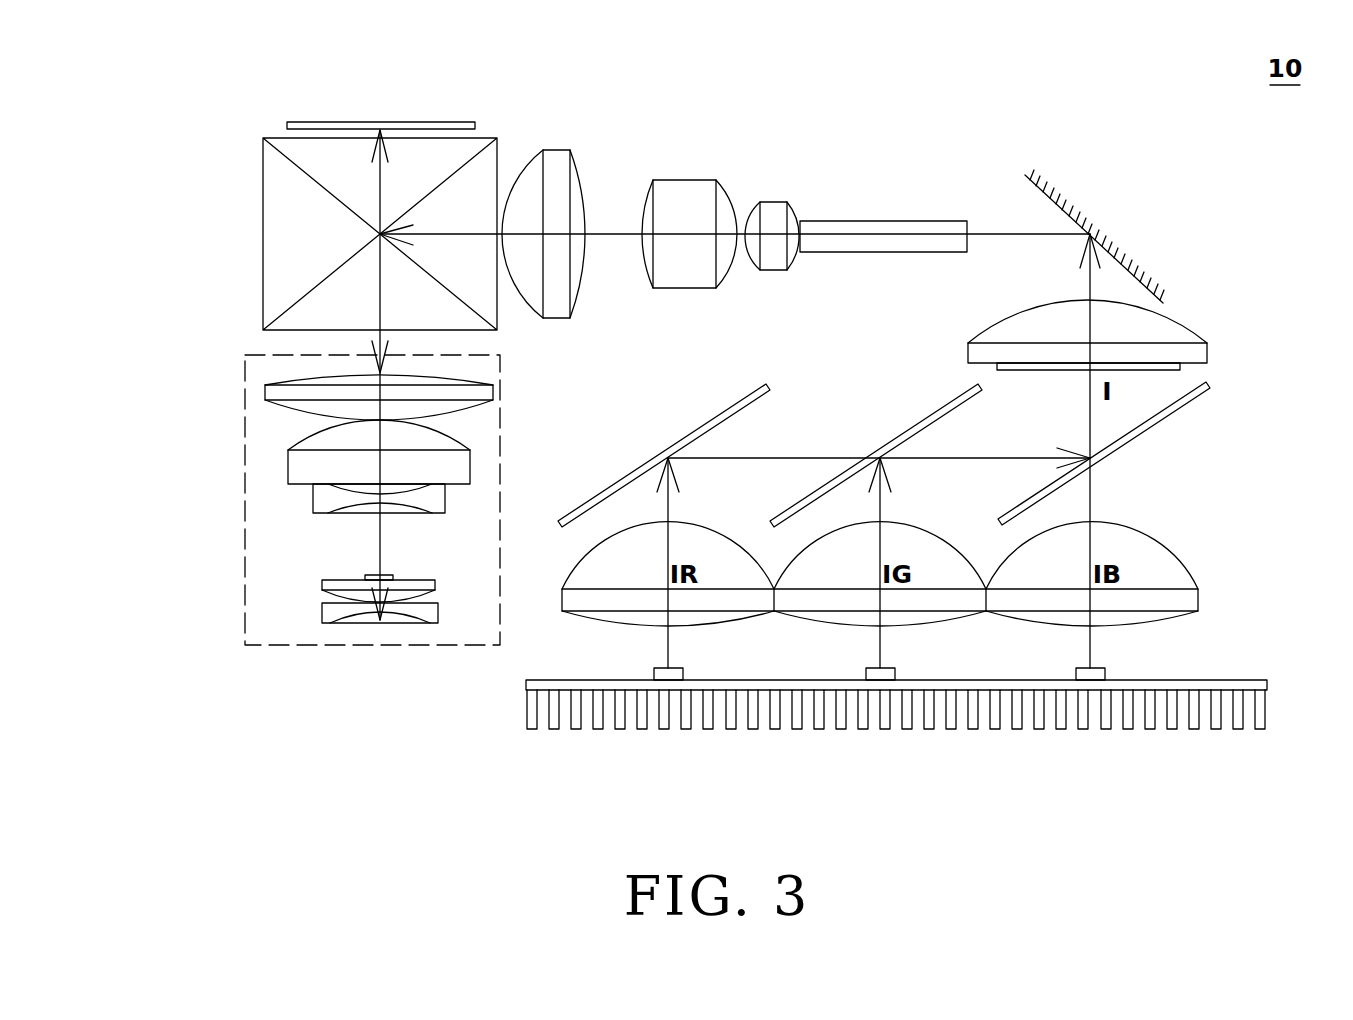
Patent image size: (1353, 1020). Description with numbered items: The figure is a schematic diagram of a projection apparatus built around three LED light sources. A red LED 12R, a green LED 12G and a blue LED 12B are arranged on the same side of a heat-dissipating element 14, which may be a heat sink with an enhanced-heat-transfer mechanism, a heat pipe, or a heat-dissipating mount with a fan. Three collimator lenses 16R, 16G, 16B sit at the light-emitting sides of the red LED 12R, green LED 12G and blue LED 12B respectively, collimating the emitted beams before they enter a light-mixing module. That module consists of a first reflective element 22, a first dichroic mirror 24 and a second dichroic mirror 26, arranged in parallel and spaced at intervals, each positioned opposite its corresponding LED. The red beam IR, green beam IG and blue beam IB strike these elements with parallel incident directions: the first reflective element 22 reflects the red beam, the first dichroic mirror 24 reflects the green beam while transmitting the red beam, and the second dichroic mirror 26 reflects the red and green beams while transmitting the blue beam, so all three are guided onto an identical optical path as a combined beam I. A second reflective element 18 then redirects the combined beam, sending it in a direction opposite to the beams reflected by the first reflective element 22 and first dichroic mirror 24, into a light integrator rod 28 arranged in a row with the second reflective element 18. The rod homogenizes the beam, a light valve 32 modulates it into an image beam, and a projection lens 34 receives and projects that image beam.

The red LED 12R is at (653, 677).
The green LED 12G is at (866, 677).
The blue LED 12B is at (1076, 677).
The heat-dissipating element 14 is at (1190, 680).
The collimator lens 16R is at (688, 527).
The collimator lens 16G is at (900, 527).
The collimator lens 16B is at (1108, 527).
The second reflective element 18 is at (1103, 232).
The first reflective element 22 is at (707, 419).
The first dichroic mirror 24 is at (919, 421).
The second dichroic mirror 26 is at (1130, 430).
The light integrator rod 28 is at (882, 220).
The light valve 32 is at (380, 122).
The projection lens 34 is at (245, 500).